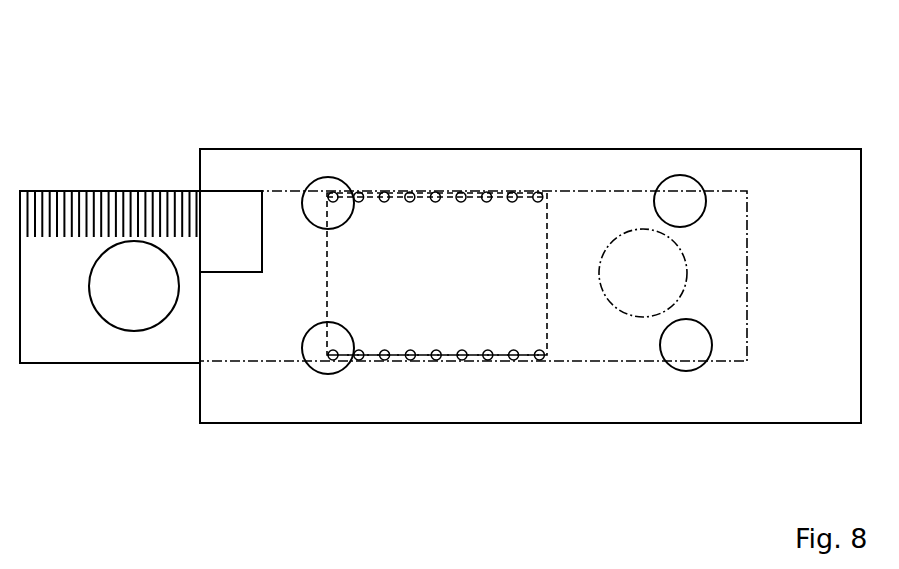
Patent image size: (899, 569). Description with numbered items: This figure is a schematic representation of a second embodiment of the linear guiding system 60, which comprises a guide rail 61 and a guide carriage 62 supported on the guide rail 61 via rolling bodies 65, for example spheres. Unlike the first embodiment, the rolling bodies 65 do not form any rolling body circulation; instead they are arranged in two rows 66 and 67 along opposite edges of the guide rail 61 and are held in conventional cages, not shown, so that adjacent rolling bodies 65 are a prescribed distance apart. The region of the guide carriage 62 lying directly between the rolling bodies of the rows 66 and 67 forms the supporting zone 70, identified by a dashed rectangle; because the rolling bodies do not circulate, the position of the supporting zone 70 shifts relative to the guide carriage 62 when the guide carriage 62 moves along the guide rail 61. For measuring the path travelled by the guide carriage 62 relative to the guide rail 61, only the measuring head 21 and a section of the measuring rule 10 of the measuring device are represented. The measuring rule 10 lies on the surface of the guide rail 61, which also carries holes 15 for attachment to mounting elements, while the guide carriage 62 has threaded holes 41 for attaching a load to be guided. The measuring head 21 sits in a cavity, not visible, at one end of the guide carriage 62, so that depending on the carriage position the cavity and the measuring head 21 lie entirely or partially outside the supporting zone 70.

The measuring rule 10 is at (42, 210).
The holes 15 is at (125, 332).
The measuring head 21 is at (228, 212).
The threaded holes 41 is at (325, 375).
The linear guiding system 60 is at (667, 130).
The guide rail 61 is at (40, 345).
The guide carriage 62 is at (805, 175).
The rolling bodies 65 is at (484, 194).
The row of rolling bodies 66 is at (424, 360).
The row of rolling bodies 67 is at (418, 190).
The supporting zone 70 is at (547, 288).